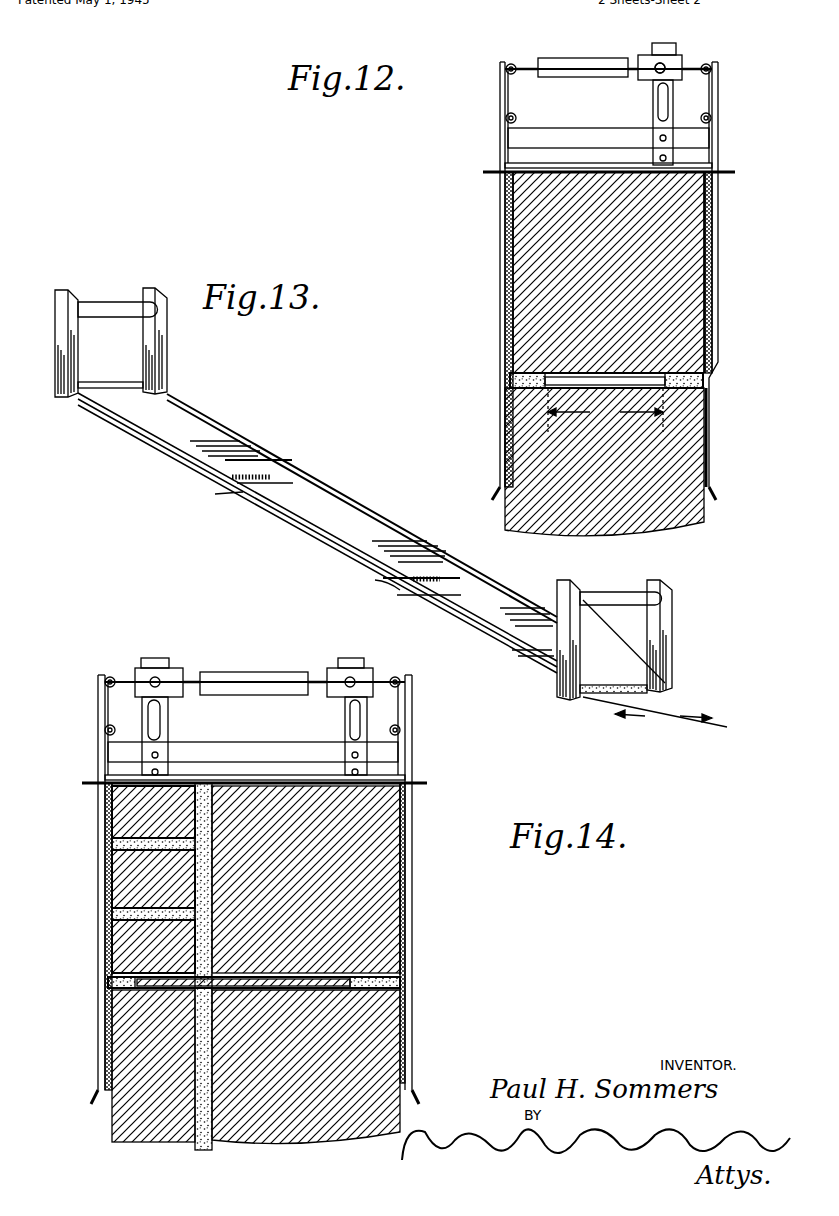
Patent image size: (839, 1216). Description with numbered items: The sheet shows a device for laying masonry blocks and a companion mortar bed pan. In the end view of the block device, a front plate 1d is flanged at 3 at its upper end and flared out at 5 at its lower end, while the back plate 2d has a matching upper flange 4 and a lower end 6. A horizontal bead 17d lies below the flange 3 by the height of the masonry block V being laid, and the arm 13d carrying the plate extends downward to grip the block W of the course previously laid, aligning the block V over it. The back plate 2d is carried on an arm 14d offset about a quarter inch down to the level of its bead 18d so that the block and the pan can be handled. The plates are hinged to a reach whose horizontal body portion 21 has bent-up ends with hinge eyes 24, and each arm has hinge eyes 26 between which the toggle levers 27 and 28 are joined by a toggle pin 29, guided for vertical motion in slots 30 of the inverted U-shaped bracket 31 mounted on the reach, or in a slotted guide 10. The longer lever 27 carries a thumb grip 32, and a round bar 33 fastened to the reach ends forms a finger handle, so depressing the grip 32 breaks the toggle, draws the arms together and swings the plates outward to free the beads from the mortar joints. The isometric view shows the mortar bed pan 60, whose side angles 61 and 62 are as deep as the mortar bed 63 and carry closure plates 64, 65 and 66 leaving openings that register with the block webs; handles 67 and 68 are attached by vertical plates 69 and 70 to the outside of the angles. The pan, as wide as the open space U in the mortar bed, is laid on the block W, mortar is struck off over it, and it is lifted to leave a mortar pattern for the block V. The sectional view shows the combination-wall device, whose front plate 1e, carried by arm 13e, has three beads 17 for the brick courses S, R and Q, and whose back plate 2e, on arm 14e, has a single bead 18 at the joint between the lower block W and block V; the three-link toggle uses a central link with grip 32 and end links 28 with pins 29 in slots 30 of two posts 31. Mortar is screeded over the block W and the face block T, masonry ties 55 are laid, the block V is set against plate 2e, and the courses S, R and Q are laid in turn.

In FIG. 12, the front plate 1d is at (505, 254).
In FIG. 12, the back plate 2d is at (712, 296).
In FIG. 14, the front plate 1e is at (108, 1014).
In FIG. 14, the back plate 2e is at (400, 934).
In FIG. 12, the flange 3 is at (483, 171).
In FIG. 14, the flange 3 is at (82, 782).
In FIG. 12, the flange 4 is at (735, 171).
In FIG. 14, the flange 4 is at (420, 789).
In FIG. 12, the flared lower end 5 is at (499, 488).
In FIG. 14, the flared lower end 5 is at (95, 1099).
In FIG. 12, the right post 6 is at (718, 493).
In FIG. 14, the right post 6 is at (418, 1099).
In FIG. 12, the slotted guide bar 10 is at (658, 95).
In FIG. 12, the arm 13d is at (505, 205).
In FIG. 12, the arm 14d is at (716, 218).
In FIG. 14, the left lining strip 13e is at (108, 860).
In FIG. 14, the right lining strip 14e is at (412, 852).
In FIG. 14, the horizontal bead 17 is at (110, 843).
In FIG. 12, the horizontal bead 17d is at (510, 380).
In FIG. 14, the horizontal bead 18 is at (402, 983).
In FIG. 12, the horizontal bead 18d is at (703, 380).
In FIG. 12, the horizontal body portion 21 is at (595, 163).
In FIG. 14, the horizontal body portion 21 is at (255, 731).
In FIG. 12, the hinge eyes 24 is at (505, 117).
In FIG. 14, the hinge eyes 24 is at (105, 728).
In FIG. 12, the hinge eyes 26 is at (506, 66).
In FIG. 14, the hinge eyes 26 is at (105, 680).
In FIG. 12, the toggle lever 27 is at (517, 65).
In FIG. 12, the toggle lever 28 is at (693, 62).
In FIG. 14, the toggle lever 28 is at (130, 675).
In FIG. 12, the toggle pin 29 is at (675, 67).
In FIG. 14, the toggle pin 29 is at (162, 677).
In FIG. 14, the slots 30 is at (158, 714).
In FIG. 12, the vertical bracket 31 is at (661, 43).
In FIG. 14, the vertical bracket 31 is at (153, 658).
In FIG. 12, the grip portion 32 is at (568, 58).
In FIG. 14, the grip portion 32 is at (250, 672).
In FIG. 12, the round bar 33 is at (545, 136).
In FIG. 14, the round bar 33 is at (262, 752).
In FIG. 14, the masonry ties 55 is at (330, 990).
In FIG. 13, the mortar bed pan 60 is at (317, 522).
In FIG. 13, the side angle 61 is at (148, 442).
In FIG. 13, the side angle 62 is at (270, 460).
In FIG. 12, the mortar bed 63 is at (506, 400).
In FIG. 13, the closure plate 64 is at (176, 420).
In FIG. 13, the closure plate 65 is at (312, 512).
In FIG. 13, the closure plate 66 is at (530, 630).
In FIG. 13, the handle 67 is at (110, 300).
In FIG. 13, the handle 68 is at (600, 593).
In FIG. 13, the vertical plate 69 is at (64, 334).
In FIG. 13, the vertical plate 70 is at (162, 339).
In FIG. 14, the top course of bricks Q is at (122, 817).
In FIG. 14, the middle course of bricks R is at (118, 887).
In FIG. 14, the lower course of bricks S is at (108, 947).
In FIG. 14, the block T is at (118, 1049).
In FIG. 12, the open space U is at (605, 411).
In FIG. 13, the open space U is at (655, 712).
In FIG. 12, the masonry block V is at (525, 314).
In FIG. 14, the masonry block V is at (385, 888).
In FIG. 12, the block W is at (683, 460).
In FIG. 14, the block W is at (306, 1067).